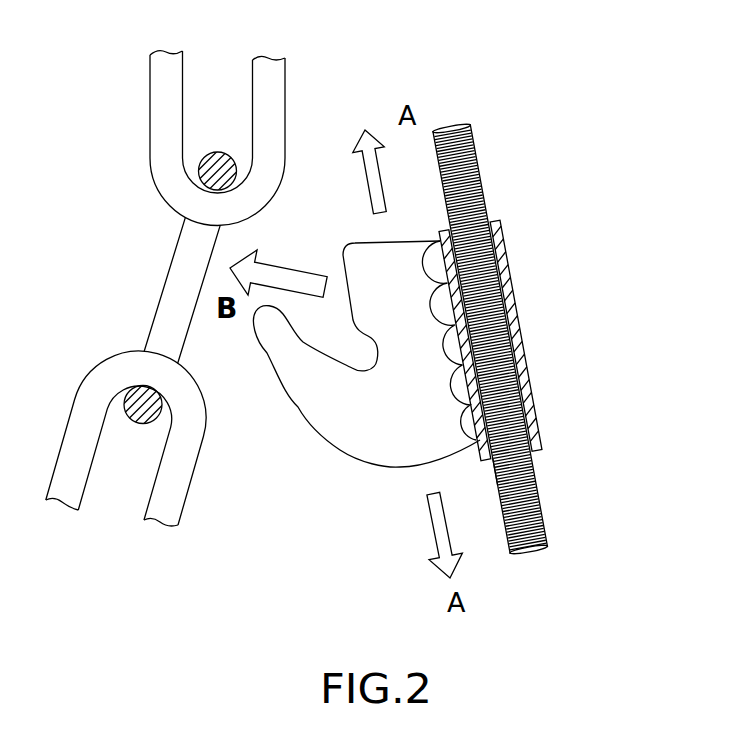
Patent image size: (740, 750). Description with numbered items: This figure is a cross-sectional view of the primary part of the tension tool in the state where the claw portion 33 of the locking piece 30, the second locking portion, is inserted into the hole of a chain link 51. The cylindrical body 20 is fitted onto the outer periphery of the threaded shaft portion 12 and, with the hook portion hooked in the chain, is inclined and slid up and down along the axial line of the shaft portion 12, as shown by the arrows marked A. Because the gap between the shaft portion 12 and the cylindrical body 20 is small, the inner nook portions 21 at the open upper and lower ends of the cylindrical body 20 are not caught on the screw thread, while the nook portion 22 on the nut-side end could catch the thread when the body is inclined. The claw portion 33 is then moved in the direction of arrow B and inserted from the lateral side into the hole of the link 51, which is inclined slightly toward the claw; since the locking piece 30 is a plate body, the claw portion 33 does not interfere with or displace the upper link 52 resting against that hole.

The shaft portion 12 is at (467, 198).
The cylindrical body 20 is at (531, 339).
The inner nook portions 21 is at (482, 213).
The nook portion 22 is at (497, 478).
The locking piece 30 is at (356, 315).
The claw portion 33 is at (288, 356).
The link 51 is at (177, 288).
The upper link 52 is at (162, 132).